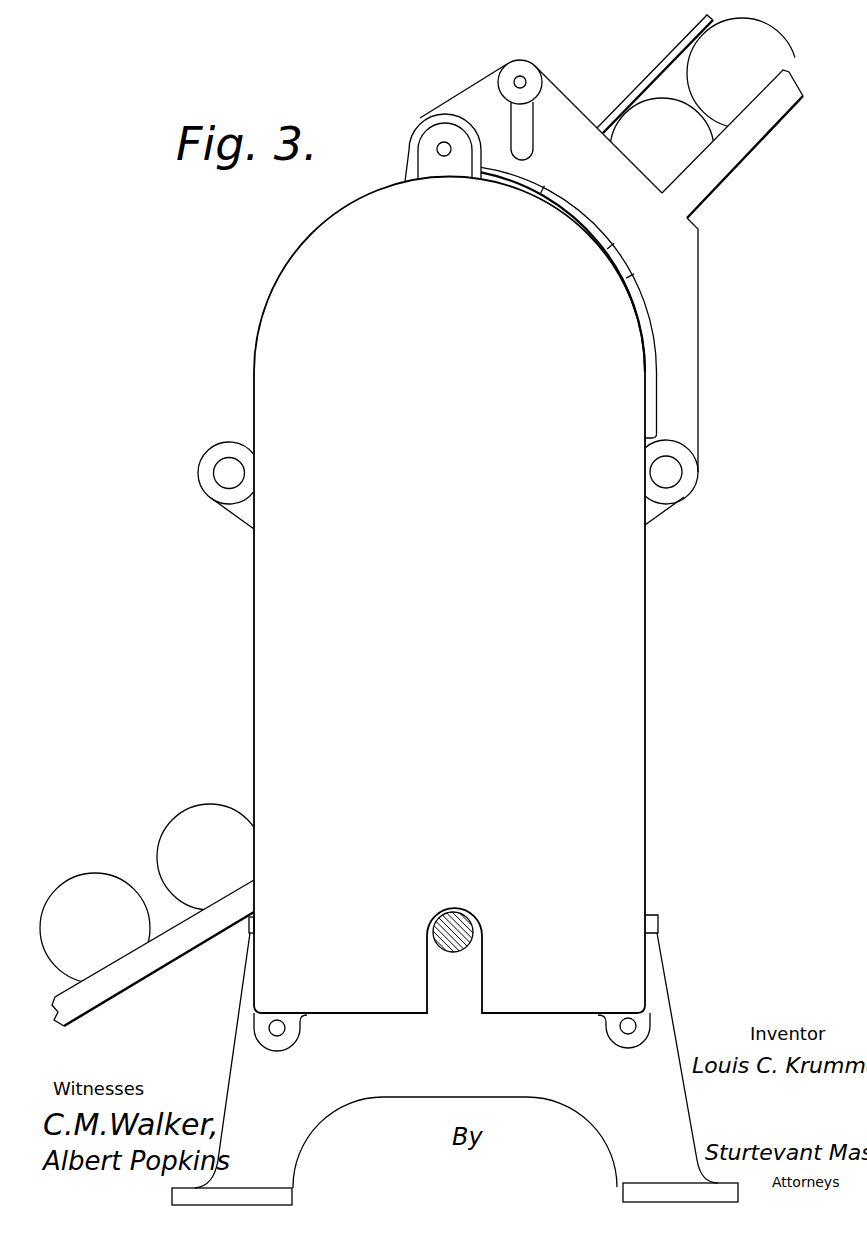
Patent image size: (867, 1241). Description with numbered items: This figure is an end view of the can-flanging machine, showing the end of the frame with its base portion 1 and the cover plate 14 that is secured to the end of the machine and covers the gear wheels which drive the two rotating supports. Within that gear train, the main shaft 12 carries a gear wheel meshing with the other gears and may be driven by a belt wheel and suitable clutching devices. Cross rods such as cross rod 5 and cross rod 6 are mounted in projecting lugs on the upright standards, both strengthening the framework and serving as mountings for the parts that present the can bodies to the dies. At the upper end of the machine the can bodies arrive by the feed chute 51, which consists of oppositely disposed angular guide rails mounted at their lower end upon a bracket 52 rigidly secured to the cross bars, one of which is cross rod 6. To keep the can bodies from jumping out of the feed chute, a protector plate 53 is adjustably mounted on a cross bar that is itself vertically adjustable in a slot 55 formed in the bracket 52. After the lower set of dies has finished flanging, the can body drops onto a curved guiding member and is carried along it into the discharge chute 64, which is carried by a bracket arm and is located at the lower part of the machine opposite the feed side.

The base portion 1 is at (393, 1074).
The cross rod 5 is at (225, 483).
The cross rod 6 is at (663, 480).
The main shaft 12 is at (451, 952).
The cover plate 14 is at (449, 595).
The feed chute 51 is at (712, 195).
The bracket 52 is at (686, 319).
The protector plate 53 is at (610, 104).
The slot 55 is at (518, 115).
The discharge chute 64 is at (153, 953).